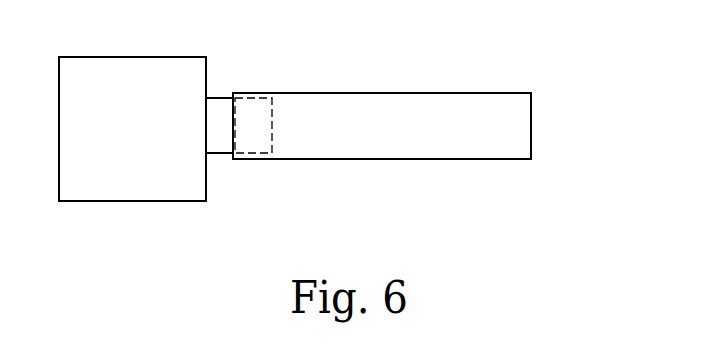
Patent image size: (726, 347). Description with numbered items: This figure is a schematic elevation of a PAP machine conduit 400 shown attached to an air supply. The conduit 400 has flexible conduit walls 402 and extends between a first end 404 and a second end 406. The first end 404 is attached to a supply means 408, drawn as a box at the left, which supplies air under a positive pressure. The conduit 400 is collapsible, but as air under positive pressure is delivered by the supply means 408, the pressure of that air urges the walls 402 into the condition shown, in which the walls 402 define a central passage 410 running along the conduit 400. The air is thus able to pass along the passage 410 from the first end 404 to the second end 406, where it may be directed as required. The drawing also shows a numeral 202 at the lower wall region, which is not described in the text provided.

The supply means 408 is at (158, 58).
The first end 404 is at (225, 90).
The PAP machine conduit 400 is at (327, 87).
The second end 406 is at (532, 108).
The light guide 202 is at (348, 152).
The flexible conduit walls 402 is at (393, 152).
The central passage 410 is at (522, 138).